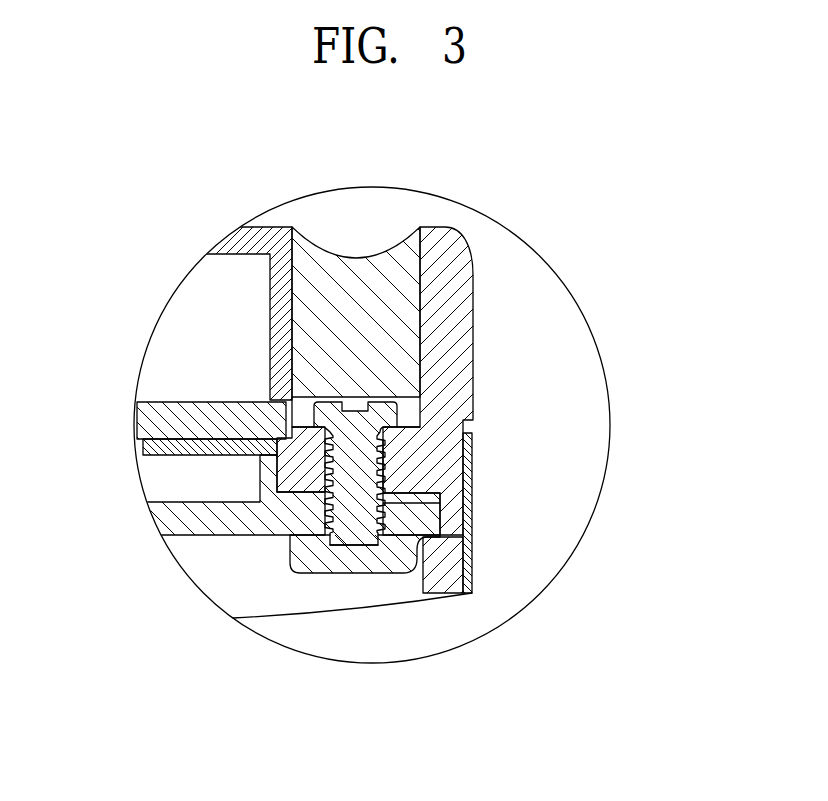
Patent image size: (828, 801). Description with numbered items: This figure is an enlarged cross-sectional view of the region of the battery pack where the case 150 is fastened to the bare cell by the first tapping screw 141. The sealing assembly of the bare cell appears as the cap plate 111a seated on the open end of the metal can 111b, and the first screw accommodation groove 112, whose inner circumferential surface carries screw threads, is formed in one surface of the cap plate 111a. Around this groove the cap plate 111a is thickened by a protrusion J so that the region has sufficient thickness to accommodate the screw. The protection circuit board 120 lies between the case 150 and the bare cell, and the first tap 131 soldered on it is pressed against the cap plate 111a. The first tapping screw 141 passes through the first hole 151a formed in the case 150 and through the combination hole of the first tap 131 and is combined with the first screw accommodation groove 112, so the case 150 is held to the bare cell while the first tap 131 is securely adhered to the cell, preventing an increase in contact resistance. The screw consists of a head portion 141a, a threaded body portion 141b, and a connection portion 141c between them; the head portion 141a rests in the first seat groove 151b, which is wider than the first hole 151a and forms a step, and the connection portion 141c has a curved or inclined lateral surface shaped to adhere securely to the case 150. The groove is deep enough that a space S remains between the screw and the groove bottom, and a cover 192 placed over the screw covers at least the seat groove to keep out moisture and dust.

The case 150 is at (254, 240).
The cover 192 is at (357, 262).
The first tapping screw 141 is at (394, 392).
The head portion 141a is at (392, 413).
The body portion 141b is at (384, 514).
The connection portion 141c is at (387, 433).
The protection circuit board 120 is at (167, 389).
The first tap 131 is at (249, 480).
The cap plate 111a is at (156, 515).
The metal can 111b is at (442, 585).
The first screw accommodation groove 112 is at (328, 523).
The first hole 151a is at (293, 480).
The first seat groove 151b is at (297, 413).
The space S is at (353, 543).
The protrusion J is at (358, 587).